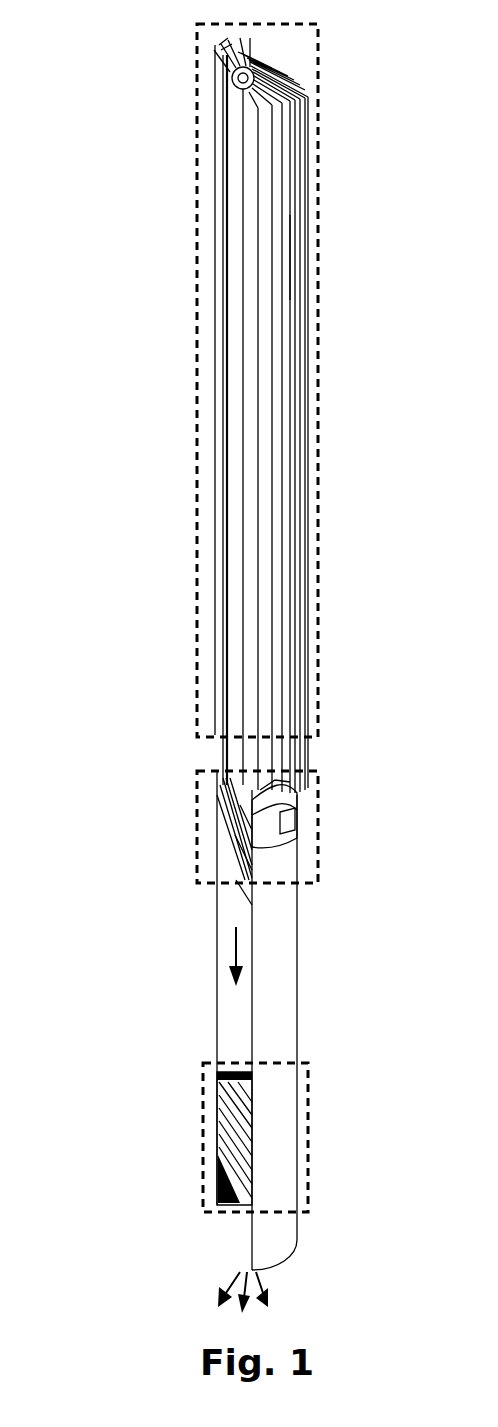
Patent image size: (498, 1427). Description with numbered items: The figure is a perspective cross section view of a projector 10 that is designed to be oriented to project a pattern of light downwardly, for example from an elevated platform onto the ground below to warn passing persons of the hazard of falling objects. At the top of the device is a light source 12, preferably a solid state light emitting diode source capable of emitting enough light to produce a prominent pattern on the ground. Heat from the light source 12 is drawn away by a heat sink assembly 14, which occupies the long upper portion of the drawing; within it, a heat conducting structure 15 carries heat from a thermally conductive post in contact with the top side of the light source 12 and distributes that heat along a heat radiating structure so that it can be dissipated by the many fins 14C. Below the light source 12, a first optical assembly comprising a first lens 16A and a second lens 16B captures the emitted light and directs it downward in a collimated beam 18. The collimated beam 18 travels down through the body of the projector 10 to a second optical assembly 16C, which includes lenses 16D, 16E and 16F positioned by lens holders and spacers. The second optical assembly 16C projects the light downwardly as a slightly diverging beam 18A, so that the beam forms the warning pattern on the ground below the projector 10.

The projector 10 is at (138, 99).
The heat sink assembly 14 is at (318, 97).
The fins 14C is at (294, 214).
The heat conducting structure 15 is at (237, 256).
The light source 12 is at (240, 758).
The first lens 16A is at (237, 805).
The second lens 16B is at (237, 855).
The collimated beam 18 is at (236, 945).
The second optical assembly 16C is at (308, 1078).
The lens 16D is at (232, 1104).
The lens 16E is at (232, 1138).
The lens 16F is at (218, 1177).
The slightly diverging beam 18A is at (262, 1290).